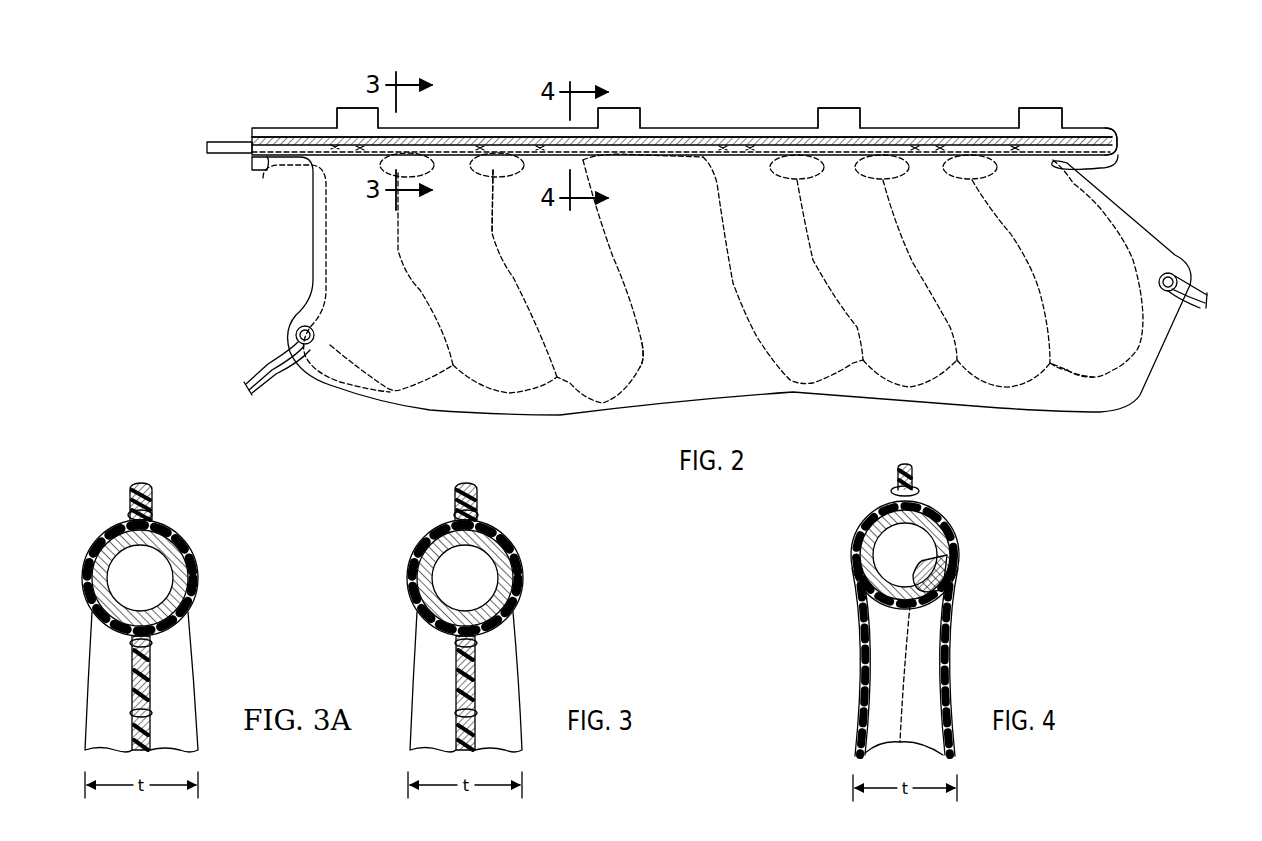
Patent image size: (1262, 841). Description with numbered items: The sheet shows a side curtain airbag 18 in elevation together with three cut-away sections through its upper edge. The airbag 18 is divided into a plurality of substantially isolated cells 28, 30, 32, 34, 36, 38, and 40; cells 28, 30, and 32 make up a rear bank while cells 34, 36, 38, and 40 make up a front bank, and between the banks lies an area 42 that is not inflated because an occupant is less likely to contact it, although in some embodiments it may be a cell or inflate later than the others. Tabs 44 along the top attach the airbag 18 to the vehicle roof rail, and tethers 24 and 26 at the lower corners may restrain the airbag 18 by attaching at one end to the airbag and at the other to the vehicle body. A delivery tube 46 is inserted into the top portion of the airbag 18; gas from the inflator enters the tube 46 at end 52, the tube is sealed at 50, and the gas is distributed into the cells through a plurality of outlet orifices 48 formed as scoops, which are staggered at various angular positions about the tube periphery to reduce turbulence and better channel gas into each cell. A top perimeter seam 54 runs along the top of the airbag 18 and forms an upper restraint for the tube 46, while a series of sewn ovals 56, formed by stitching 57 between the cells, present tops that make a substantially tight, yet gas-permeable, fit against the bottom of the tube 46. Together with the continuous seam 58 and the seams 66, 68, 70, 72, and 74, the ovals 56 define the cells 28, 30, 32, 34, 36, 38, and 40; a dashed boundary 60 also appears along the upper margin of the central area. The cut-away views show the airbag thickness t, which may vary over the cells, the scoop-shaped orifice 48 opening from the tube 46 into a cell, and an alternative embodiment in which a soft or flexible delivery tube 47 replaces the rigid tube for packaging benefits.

In FIG. 2, the side curtain airbag 18 is at (788, 92).
In FIG. 2, the tether 24 is at (275, 360).
In FIG. 2, the tether 26 is at (1195, 278).
In FIG. 2, the cell 28 is at (367, 328).
In FIG. 2, the cell 30 is at (484, 328).
In FIG. 2, the cell 32 is at (587, 328).
In FIG. 2, the cell 34 is at (797, 328).
In FIG. 2, the cell 36 is at (897, 328).
In FIG. 2, the cell 38 is at (992, 328).
In FIG. 2, the cell 40 is at (1090, 328).
In FIG. 2, the area 42 is at (687, 328).
In FIG. 2, the tabs 44 is at (355, 108).
In FIG. 2, the delivery tube 46 is at (224, 140).
In FIG. 3, the delivery tube 46 is at (510, 578).
In FIG. 4, the delivery tube 46 is at (885, 590).
In FIG. 3A, the flexible delivery tube 47 is at (185, 578).
In FIG. 2, the outlet orifices 48 is at (360, 145).
In FIG. 4, the outlet orifices 48 is at (947, 548).
In FIG. 2, the seal 50 is at (1100, 136).
In FIG. 2, the end 52 is at (207, 148).
In FIG. 2, the top perimeter seam 54 is at (700, 138).
In FIG. 3A, the top perimeter seam 54 is at (152, 515).
In FIG. 3, the top perimeter seam 54 is at (477, 515).
In FIG. 4, the top perimeter seam 54 is at (919, 490).
In FIG. 2, the sewn ovals 56 is at (436, 176).
In FIG. 3A, the stitching 57 is at (152, 713).
In FIG. 3, the stitching 57 is at (477, 713).
In FIG. 2, the continuous seam 58 is at (263, 165).
In FIG. 2, the upper edge 60 is at (660, 157).
In FIG. 2, the seam 66 is at (415, 251).
In FIG. 2, the seam 68 is at (510, 256).
In FIG. 2, the seam 70 is at (823, 260).
In FIG. 2, the seam 72 is at (925, 263).
In FIG. 2, the seam 74 is at (1035, 262).